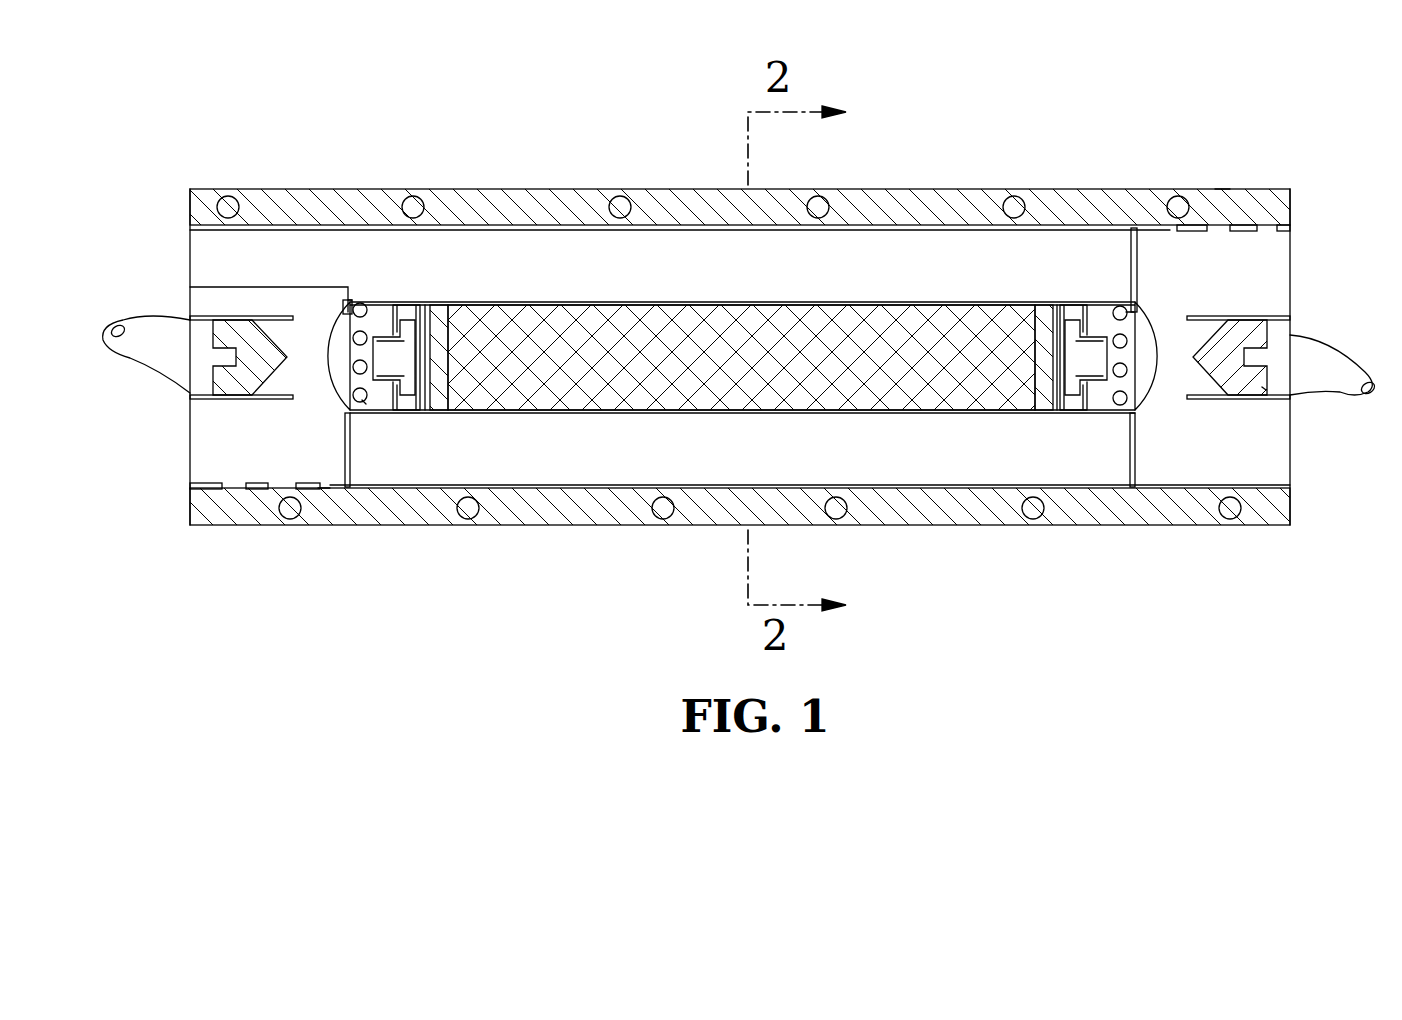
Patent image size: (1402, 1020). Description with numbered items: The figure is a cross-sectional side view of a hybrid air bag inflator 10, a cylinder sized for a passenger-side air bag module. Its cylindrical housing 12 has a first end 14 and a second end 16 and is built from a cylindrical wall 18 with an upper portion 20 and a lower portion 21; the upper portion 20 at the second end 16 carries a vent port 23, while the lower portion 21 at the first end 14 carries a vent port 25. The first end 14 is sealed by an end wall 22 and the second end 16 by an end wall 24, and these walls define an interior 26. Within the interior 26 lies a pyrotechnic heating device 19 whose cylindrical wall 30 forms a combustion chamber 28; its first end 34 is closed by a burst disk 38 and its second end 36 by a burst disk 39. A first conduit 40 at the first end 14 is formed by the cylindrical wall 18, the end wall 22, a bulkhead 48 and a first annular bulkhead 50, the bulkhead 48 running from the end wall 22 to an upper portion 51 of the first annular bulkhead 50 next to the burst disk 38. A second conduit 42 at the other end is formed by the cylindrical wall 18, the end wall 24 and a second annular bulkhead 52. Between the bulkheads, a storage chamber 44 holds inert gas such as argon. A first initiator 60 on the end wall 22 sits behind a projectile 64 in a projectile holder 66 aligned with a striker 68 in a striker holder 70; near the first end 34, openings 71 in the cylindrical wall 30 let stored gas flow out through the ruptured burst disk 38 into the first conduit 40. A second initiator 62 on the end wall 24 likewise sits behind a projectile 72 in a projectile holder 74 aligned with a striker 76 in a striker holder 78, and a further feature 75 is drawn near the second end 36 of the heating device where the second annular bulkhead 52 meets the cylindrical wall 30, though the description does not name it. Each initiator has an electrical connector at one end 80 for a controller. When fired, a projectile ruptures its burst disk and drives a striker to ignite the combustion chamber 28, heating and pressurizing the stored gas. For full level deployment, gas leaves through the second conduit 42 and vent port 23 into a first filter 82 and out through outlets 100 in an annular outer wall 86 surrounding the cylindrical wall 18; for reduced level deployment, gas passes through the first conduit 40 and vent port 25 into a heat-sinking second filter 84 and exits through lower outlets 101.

The inflator 10 is at (622, 63).
The cylindrical housing 12 is at (749, 355).
The first end 14 is at (190, 189).
The second end 16 is at (1290, 189).
The cylindrical wall 18 is at (178, 223).
The pyrotechnic heating device 19 is at (884, 428).
The upper portion 20 is at (740, 346).
The lower portion 21 is at (740, 539).
The end wall 22 is at (190, 470).
The vent port 23 is at (1222, 191).
The end wall 24 is at (1290, 237).
The vent port 25 is at (318, 488).
The interior 26 is at (1155, 408).
The combustion chamber 28 is at (517, 400).
The cylindrical wall 30 is at (960, 300).
The first end 34 is at (366, 308).
The second end 36 is at (1140, 300).
The burst disk 38 is at (332, 400).
The burst disk 39 is at (1190, 316).
The first conduit 40 is at (290, 463).
The second conduit 42 is at (1282, 458).
The storage chamber 44 is at (568, 272).
The bulkhead 48 is at (290, 287).
The first annular bulkhead 50 is at (355, 478).
The upper portion 51 is at (350, 300).
The second annular bulkhead 52 is at (1140, 230).
The first initiator 60 is at (200, 382).
The second initiator 62 is at (1276, 347).
The projectile 64 is at (232, 393).
The projectile holder 66 is at (230, 292).
The striker 68 is at (397, 345).
The striker holder 70 is at (417, 324).
The openings 71 is at (365, 402).
The projectile 72 is at (1262, 387).
The projectile holder 74 is at (1255, 320).
The upper hole 75 is at (1120, 306).
The striker 76 is at (1093, 451).
The striker holder 78 is at (1072, 415).
The end 80 is at (190, 322).
The first filter 82 is at (1030, 192).
The second filter 84 is at (965, 512).
The annular outer wall 86 is at (722, 191).
The outlets 100 is at (600, 190).
The outlets 101 is at (290, 520).